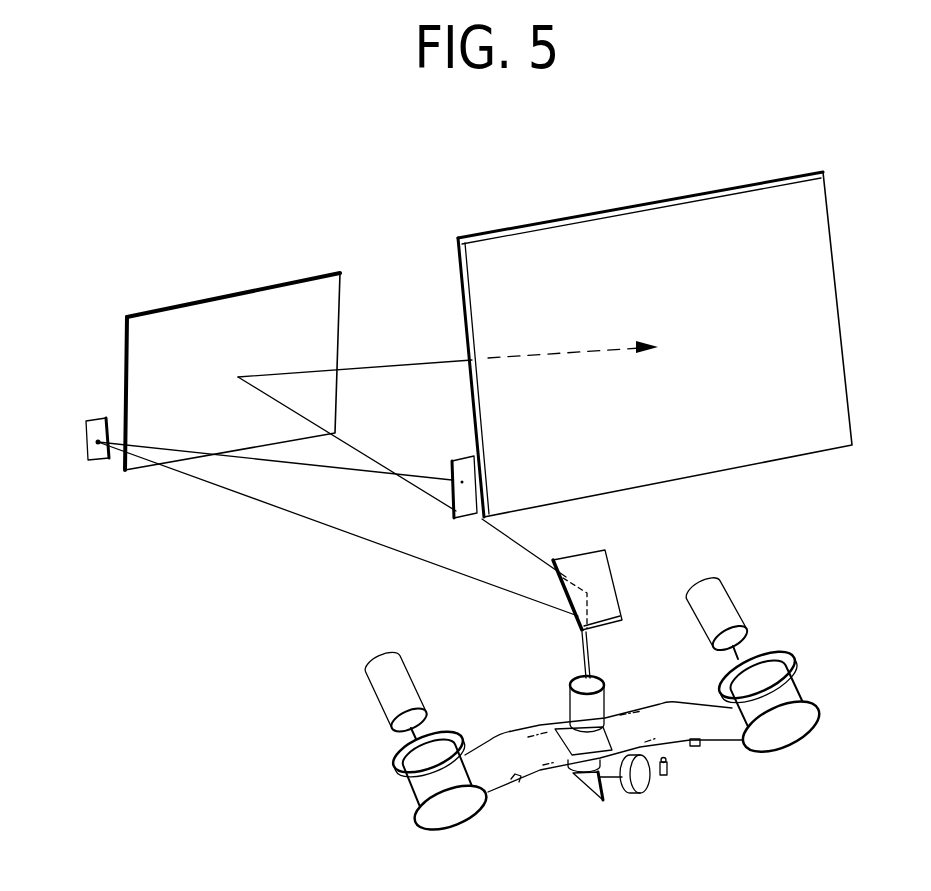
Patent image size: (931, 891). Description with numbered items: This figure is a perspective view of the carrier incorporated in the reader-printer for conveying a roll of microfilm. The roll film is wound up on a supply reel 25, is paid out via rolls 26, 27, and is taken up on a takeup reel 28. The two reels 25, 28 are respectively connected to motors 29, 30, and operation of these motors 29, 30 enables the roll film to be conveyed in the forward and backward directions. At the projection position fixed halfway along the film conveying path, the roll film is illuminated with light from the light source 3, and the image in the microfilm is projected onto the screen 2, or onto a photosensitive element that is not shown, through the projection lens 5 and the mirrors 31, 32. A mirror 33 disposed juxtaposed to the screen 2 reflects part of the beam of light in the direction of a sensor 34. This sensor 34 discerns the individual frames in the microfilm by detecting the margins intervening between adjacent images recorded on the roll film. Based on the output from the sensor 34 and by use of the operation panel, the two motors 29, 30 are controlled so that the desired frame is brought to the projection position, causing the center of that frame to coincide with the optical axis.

The screen 2 is at (650, 220).
The light source 3 is at (667, 770).
The projection lens 5 is at (577, 703).
The supply reel 25 is at (453, 813).
The roll 26 is at (515, 782).
The roll 27 is at (698, 746).
The takeup reel 28 is at (792, 733).
The motor 29 is at (380, 700).
The motor 30 is at (725, 603).
The mirror 31 is at (598, 575).
The mirror 32 is at (240, 320).
The mirror 33 is at (459, 458).
The sensor 34 is at (99, 450).